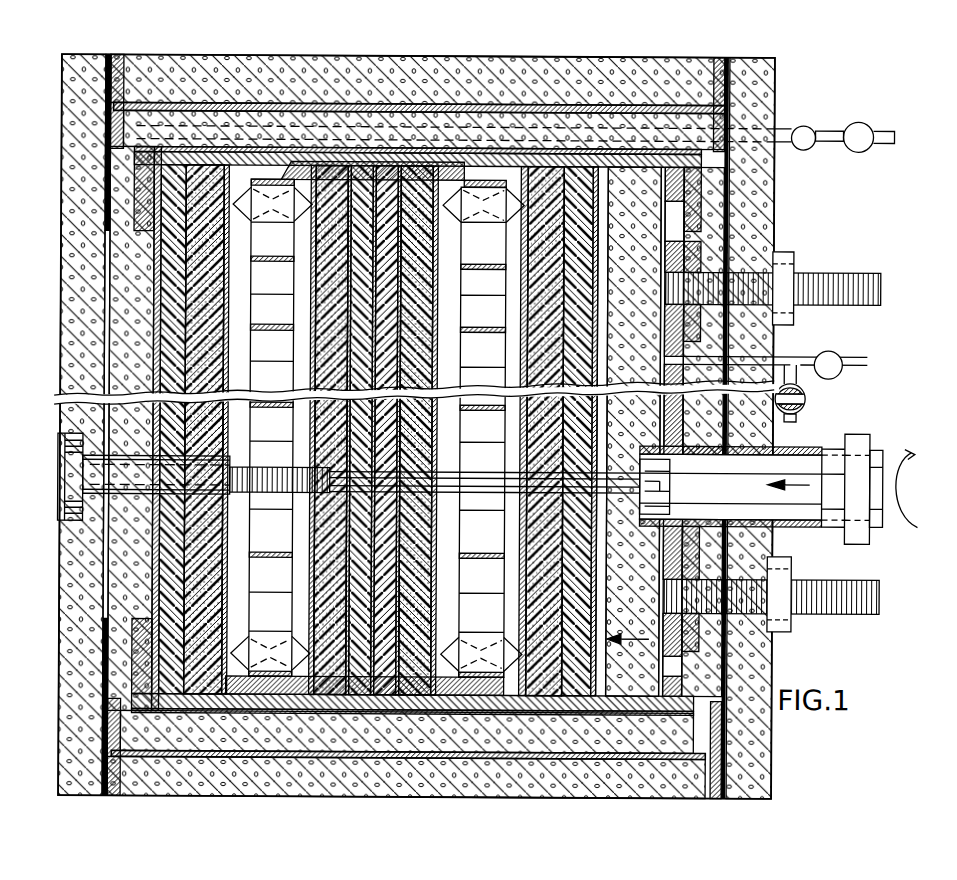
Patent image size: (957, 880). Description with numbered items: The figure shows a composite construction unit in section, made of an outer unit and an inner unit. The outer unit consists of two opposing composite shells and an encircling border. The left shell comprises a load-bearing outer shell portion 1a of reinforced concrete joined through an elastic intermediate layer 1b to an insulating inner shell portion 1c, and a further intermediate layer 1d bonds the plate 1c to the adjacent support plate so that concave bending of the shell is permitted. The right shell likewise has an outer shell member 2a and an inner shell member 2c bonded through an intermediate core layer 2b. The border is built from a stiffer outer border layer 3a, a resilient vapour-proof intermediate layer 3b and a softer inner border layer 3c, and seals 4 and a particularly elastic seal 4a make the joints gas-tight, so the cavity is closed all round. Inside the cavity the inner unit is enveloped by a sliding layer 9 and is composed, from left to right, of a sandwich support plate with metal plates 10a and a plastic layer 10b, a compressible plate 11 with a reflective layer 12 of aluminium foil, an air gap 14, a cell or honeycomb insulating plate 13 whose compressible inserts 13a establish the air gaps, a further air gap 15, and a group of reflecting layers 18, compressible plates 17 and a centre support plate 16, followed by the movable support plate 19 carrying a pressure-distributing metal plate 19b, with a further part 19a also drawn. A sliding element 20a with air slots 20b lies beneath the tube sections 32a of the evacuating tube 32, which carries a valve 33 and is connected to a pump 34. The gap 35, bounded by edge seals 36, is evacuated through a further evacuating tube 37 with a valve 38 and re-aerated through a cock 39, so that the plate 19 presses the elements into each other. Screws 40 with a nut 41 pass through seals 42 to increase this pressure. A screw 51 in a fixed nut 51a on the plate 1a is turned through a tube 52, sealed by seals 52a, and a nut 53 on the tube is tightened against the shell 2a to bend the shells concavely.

The outer shell portion 1a is at (66, 570).
The intermediate layer 1b is at (104, 552).
The inner shell portion 1c is at (115, 258).
The intermediate layer 1d is at (153, 270).
The outer shell member 2a is at (736, 198).
The intermediate core layer 2b is at (723, 548).
The inner shell member 2c is at (688, 415).
The outer border layer 3a is at (131, 92).
The intermediate layer 3b is at (535, 112).
The inner border layer 3c is at (131, 140).
The seals 4 is at (132, 200).
The seal 4a is at (107, 78).
The sliding layer 9 is at (512, 170).
The metal plate 10a is at (172, 322).
The intermediate layer 10b is at (172, 360).
The compressible plate 11 is at (215, 495).
The reflective layer 12 is at (228, 378).
The insulating plate 13 is at (258, 290).
The compressible inserts 13a is at (245, 212).
The air gap 14 is at (240, 313).
The air gap 15 is at (452, 315).
The composite support plate 16 is at (345, 712).
The compressible plates 17 is at (310, 532).
The reflecting layers 18 is at (300, 345).
The support plate 19 is at (621, 318).
The support wall part 19a is at (598, 348).
The metal plate 19b is at (610, 405).
The sliding element 20a is at (372, 150).
The air slots 20b is at (333, 150).
The evacuating tube 32 is at (252, 104).
The tube sections 32a is at (456, 110).
The valve 33 is at (808, 124).
The pump 34 is at (860, 120).
The gap 35 is at (664, 215).
The edge seals 36 is at (664, 183).
The evacuating tube 37 is at (800, 354).
The valve 38 is at (838, 375).
The cock 39 is at (806, 410).
The screws 40 is at (860, 270).
The nut 41 is at (793, 270).
The seals 42 is at (703, 230).
The screw 51 is at (487, 473).
The fixed nut 51a is at (140, 490).
The tube 52 is at (796, 446).
The seals 52a is at (694, 446).
The nut 53 is at (866, 444).